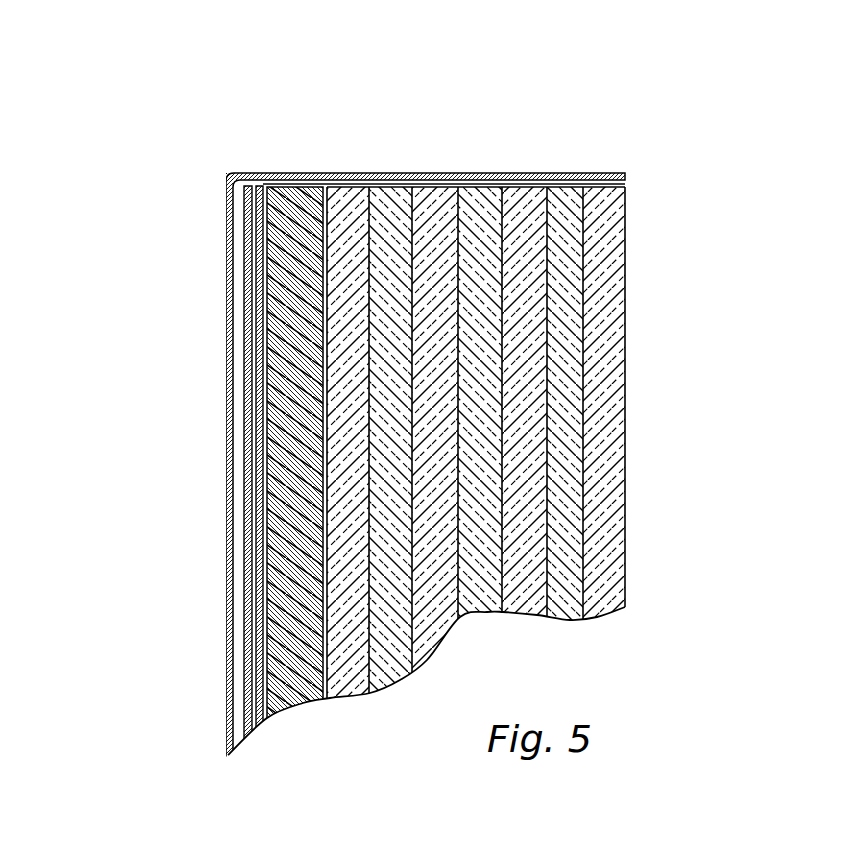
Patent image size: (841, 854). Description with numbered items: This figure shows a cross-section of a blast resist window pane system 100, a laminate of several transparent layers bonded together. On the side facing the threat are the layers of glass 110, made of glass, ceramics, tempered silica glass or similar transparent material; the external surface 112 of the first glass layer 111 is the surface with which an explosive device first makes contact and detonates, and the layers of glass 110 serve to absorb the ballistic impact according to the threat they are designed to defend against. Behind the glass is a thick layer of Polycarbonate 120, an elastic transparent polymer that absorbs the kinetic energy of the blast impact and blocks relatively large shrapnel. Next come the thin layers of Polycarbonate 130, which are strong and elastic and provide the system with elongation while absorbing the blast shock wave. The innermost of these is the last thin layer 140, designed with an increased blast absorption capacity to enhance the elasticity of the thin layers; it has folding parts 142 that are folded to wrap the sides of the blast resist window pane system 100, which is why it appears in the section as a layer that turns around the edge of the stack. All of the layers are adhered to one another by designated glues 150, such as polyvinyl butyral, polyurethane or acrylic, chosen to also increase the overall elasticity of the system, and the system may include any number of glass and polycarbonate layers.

The blast resist window pane system 100 is at (705, 233).
The layers of glass 110 is at (547, 422).
The first glass layer 111 is at (610, 373).
The external surface 112 is at (627, 490).
The thick layer of Polycarbonate 120 is at (302, 182).
The thin layers of Polycarbonate 130 is at (262, 192).
The last thin layer 140 is at (227, 230).
The folding parts 142 is at (285, 190).
The glues 150 is at (325, 312).